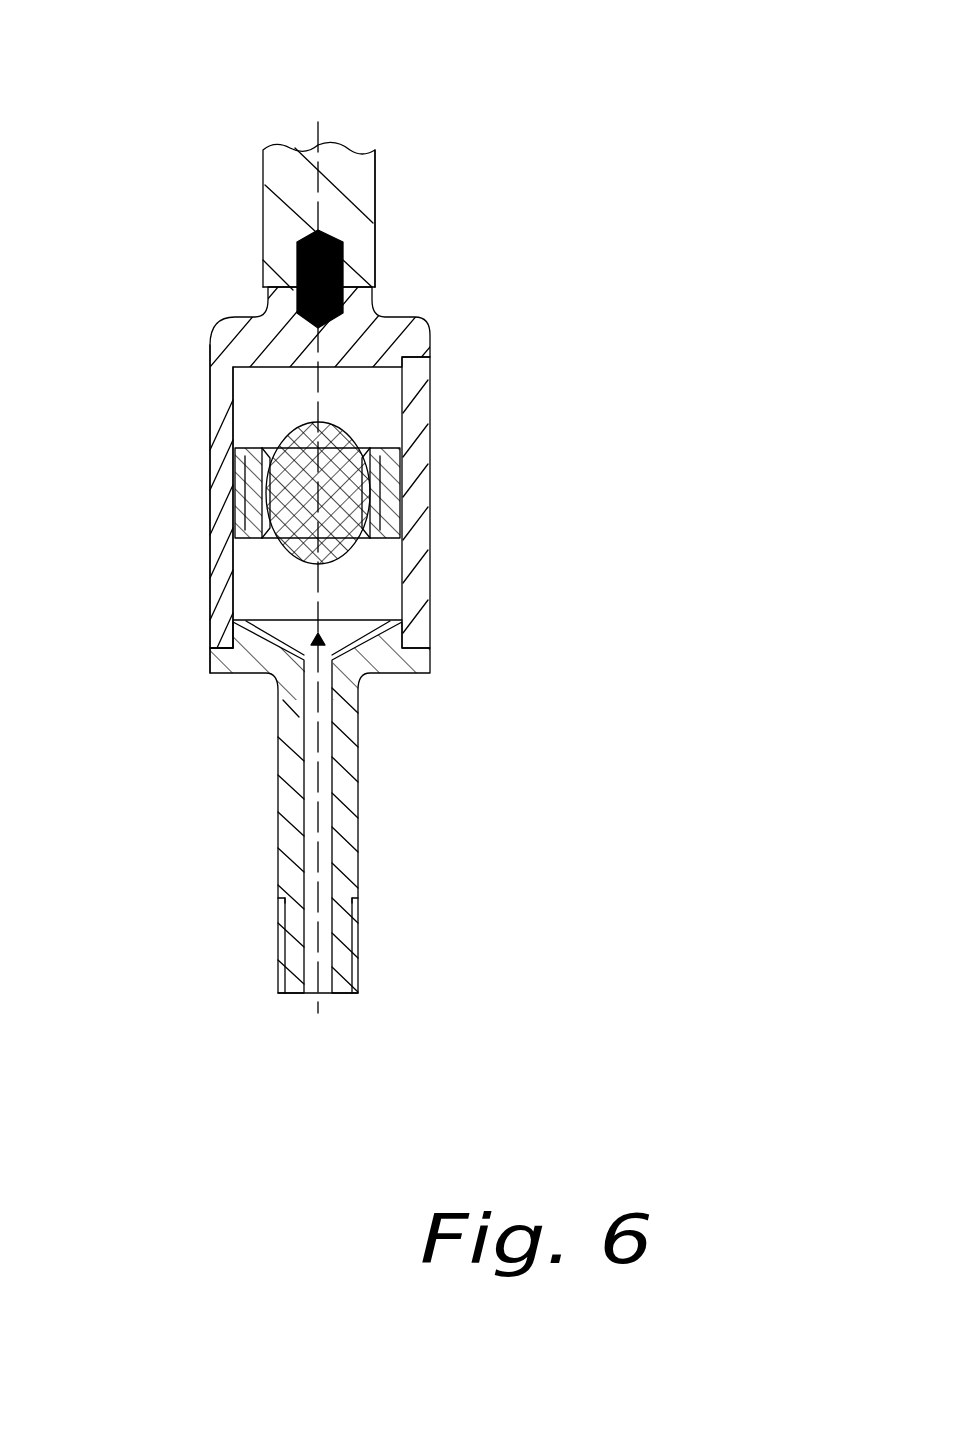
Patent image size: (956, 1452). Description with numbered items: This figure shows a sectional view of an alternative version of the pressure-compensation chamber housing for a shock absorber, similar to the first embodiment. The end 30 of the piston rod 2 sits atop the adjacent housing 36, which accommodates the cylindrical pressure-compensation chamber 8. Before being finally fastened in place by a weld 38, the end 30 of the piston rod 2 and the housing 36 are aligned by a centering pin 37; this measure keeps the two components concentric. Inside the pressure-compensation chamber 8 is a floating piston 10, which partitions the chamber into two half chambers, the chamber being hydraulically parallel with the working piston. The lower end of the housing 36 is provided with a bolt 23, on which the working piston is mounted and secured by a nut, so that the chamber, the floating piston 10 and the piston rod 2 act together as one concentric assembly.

The piston rod 2 is at (343, 167).
The end of piston rod 30 is at (405, 236).
The centering pin 37 is at (297, 266).
The weld 38 is at (372, 287).
The housing 36 is at (222, 412).
The pressure-compensation chamber 8 is at (400, 421).
The floating piston 10 is at (385, 554).
The bolt 23 is at (355, 790).